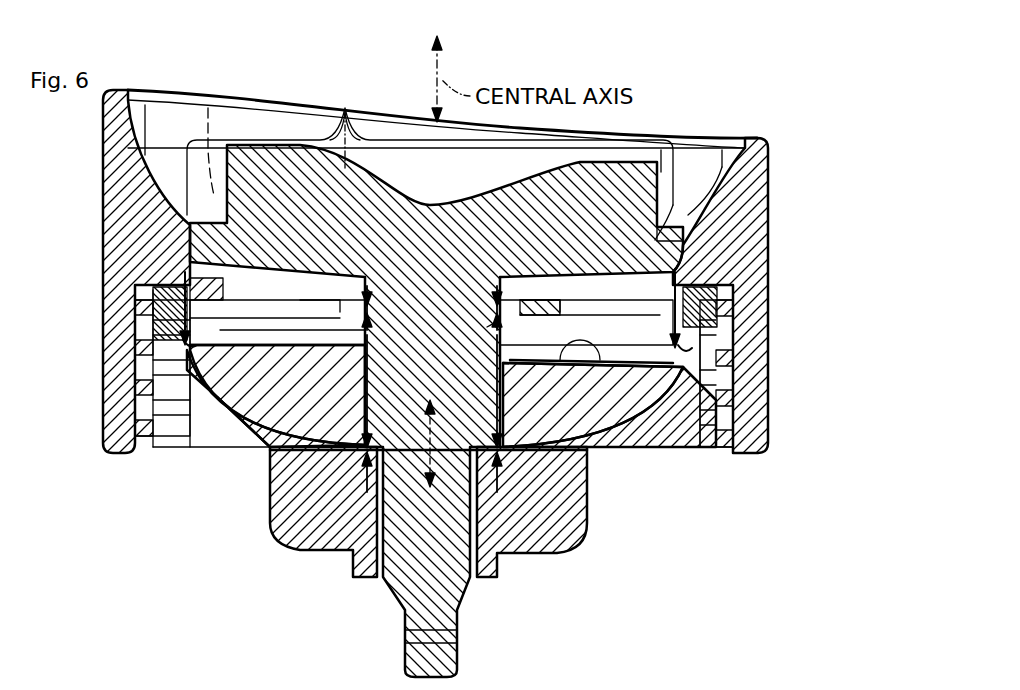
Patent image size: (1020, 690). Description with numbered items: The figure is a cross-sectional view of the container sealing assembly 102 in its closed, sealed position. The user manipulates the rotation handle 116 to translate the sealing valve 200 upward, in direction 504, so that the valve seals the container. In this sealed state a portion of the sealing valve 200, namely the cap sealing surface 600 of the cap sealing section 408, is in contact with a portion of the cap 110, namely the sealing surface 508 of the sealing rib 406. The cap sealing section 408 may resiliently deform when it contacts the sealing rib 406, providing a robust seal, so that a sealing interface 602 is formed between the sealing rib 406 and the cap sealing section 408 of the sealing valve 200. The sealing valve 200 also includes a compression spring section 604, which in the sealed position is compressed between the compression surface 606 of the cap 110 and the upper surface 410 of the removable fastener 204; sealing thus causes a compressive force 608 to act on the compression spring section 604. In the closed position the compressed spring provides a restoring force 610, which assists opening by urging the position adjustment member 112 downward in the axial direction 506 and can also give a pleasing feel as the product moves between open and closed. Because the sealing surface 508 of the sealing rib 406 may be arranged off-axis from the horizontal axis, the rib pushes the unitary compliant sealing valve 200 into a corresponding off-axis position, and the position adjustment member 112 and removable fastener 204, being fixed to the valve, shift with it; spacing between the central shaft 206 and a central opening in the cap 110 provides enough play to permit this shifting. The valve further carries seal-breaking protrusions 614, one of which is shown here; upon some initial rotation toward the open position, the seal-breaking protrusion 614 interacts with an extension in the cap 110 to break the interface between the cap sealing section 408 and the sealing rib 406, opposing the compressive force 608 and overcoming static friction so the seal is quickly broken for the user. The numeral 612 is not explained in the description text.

The container sealing assembly 102 is at (800, 158).
The cap 110 is at (766, 212).
The position adjustment member 112 is at (352, 125).
The rotation handle 116 is at (442, 203).
The sealing valve 200 is at (324, 383).
The removable fastener 204 is at (354, 536).
The central shaft 206 is at (450, 551).
The sealing rib 406 is at (165, 328).
The cap sealing section 408 is at (198, 400).
The upper surface 410 is at (572, 432).
The direction 504 is at (392, 413).
The axial direction 506 is at (472, 413).
The sealing surface 508 is at (192, 348).
The cap sealing surface 600 is at (205, 340).
The sealing interface 602 is at (180, 352).
The compression spring section 604 is at (318, 333).
The compression surface 606 is at (487, 327).
The compressive force 608 is at (365, 290).
The restoring force 610 is at (497, 355).
The seal ring 612 is at (190, 283).
The seal-breaking protrusion 614 is at (585, 330).